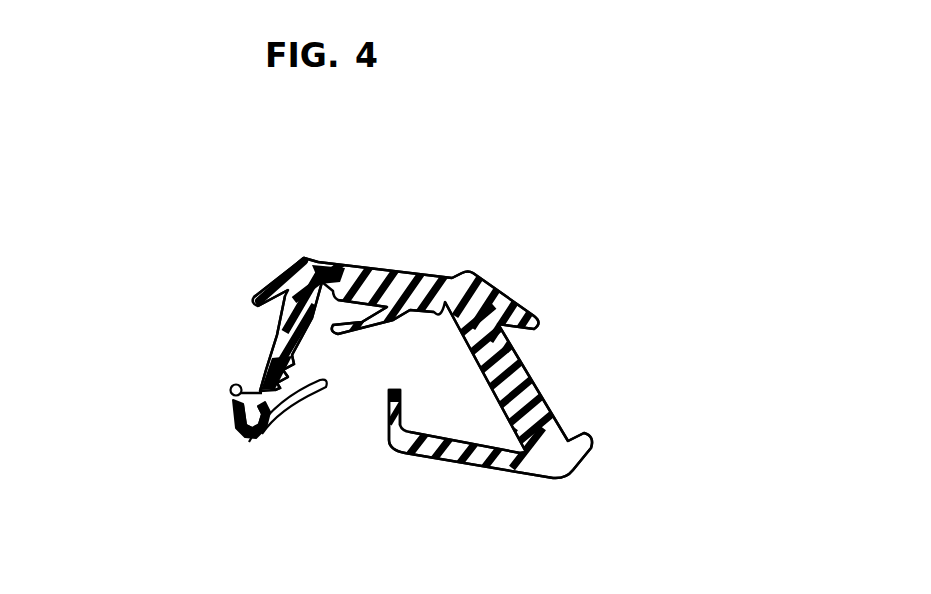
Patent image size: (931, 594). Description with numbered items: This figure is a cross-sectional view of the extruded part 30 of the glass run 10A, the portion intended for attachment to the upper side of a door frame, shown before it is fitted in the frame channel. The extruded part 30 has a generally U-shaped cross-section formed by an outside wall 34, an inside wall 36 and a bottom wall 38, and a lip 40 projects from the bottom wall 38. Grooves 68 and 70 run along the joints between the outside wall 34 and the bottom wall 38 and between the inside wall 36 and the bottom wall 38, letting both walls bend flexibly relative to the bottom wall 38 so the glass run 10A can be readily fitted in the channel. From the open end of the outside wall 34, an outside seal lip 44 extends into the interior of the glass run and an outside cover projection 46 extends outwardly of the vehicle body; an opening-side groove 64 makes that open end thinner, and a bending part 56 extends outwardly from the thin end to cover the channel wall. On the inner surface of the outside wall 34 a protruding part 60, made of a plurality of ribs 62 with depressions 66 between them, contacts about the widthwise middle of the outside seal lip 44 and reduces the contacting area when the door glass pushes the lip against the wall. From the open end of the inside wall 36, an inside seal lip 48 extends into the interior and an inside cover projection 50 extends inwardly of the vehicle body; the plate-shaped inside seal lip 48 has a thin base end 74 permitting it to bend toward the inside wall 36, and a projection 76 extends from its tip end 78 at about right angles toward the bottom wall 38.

The glass run 10A is at (278, 258).
The extruded part 30 is at (525, 350).
The outside wall 34 is at (278, 340).
The inside wall 36 is at (523, 398).
The bottom wall 38 is at (391, 285).
The lip 40 is at (360, 327).
The outside seal lip 44 is at (297, 412).
The outside cover projection 46 is at (230, 388).
The inside seal lip 48 is at (457, 462).
The inside cover projection 50 is at (597, 440).
The bending part 56 is at (265, 406).
The protruding part 60 is at (280, 372).
The ribs 62 is at (283, 378).
The opening-side groove 64 is at (268, 412).
The depressions 66 is at (262, 402).
The groove 68 is at (318, 262).
The groove 70 is at (457, 274).
The base end 74 is at (530, 453).
The projection 76 is at (384, 423).
The tip end 78 is at (397, 441).